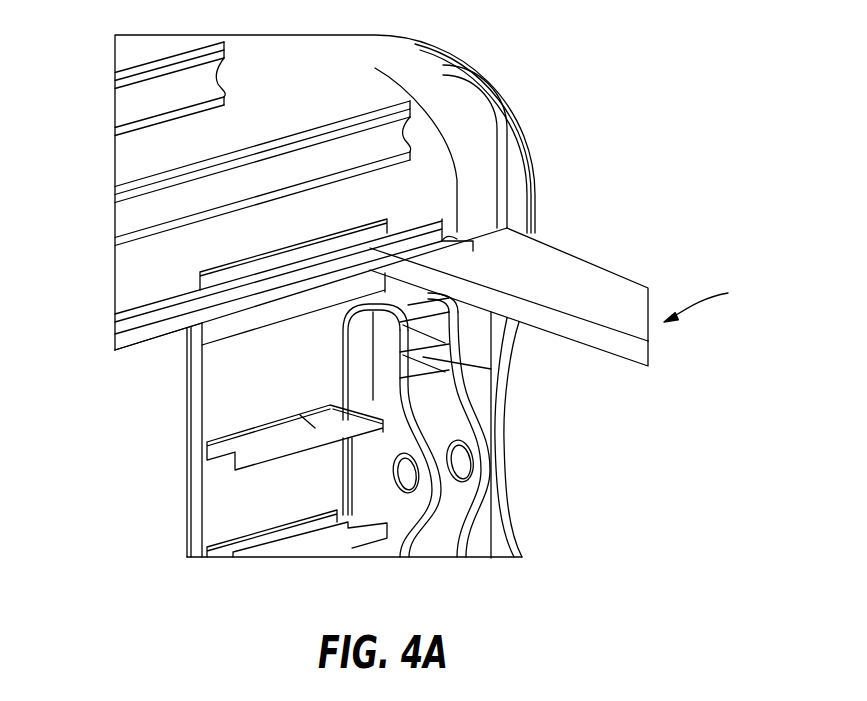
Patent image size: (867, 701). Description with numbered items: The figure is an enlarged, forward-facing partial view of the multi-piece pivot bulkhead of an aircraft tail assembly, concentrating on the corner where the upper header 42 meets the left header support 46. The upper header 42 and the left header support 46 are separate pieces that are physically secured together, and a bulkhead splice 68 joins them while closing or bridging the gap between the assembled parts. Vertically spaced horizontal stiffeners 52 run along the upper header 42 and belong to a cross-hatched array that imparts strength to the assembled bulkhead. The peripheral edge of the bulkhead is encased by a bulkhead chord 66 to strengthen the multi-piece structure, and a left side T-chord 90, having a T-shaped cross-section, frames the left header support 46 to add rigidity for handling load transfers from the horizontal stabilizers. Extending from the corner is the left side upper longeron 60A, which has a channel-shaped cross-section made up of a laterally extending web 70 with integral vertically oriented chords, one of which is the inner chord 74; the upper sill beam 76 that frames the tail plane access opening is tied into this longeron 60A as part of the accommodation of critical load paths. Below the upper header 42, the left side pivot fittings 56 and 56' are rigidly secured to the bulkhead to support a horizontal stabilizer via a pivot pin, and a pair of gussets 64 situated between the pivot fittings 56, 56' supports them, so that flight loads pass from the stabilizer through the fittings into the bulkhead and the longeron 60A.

The upper header 42 is at (140, 269).
The horizontal stiffeners 52 is at (203, 92).
The bulkhead chord 66 is at (483, 177).
The left side T-chord 90 is at (520, 213).
The bulkhead splice 68 is at (310, 250).
The web 70 is at (597, 292).
The inner chord 74 is at (587, 336).
The left side upper longeron 60A is at (714, 300).
The upper sill beam 76 is at (148, 349).
The left header support 46 is at (281, 388).
The gussets 64 is at (440, 337).
The left side pivot fitting 56' is at (370, 443).
The left side pivot fitting 56 is at (499, 434).